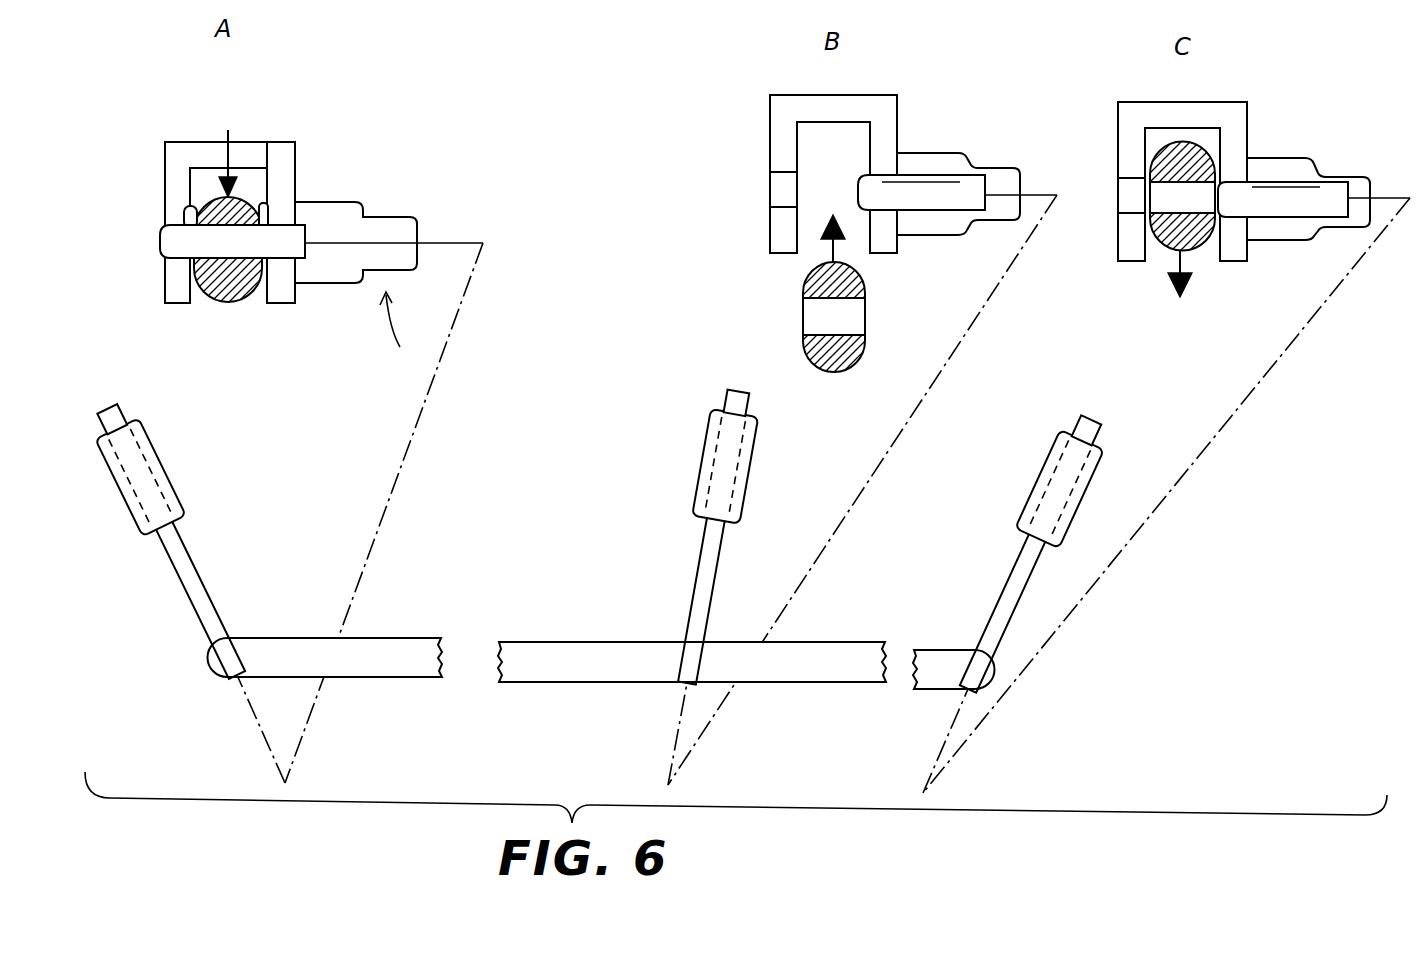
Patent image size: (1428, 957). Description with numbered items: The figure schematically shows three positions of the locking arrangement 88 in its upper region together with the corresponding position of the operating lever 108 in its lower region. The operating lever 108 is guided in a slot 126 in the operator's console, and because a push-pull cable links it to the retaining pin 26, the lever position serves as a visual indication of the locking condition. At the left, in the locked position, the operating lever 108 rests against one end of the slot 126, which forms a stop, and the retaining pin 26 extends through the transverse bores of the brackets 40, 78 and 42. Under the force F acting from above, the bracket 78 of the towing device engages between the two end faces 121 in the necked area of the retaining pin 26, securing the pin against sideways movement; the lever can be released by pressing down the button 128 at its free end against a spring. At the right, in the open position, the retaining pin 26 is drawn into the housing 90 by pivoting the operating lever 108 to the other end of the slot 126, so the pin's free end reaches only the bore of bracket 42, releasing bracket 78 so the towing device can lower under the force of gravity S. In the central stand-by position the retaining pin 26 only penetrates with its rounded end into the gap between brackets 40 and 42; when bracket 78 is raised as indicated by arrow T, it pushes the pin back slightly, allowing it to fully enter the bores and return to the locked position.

The retaining pin 26 is at (274, 252).
The bracket 40 is at (168, 176).
The bracket 42 is at (292, 188).
The bracket 78 is at (235, 290).
The locking arrangement 88 is at (405, 329).
The housing 90 is at (400, 216).
The operating lever 108 is at (190, 556).
The end faces 121 is at (184, 209).
The slot 126 is at (830, 648).
The button 128 is at (126, 413).
The force F is at (232, 172).
The arrow T is at (842, 238).
The force of gravity S is at (1188, 284).